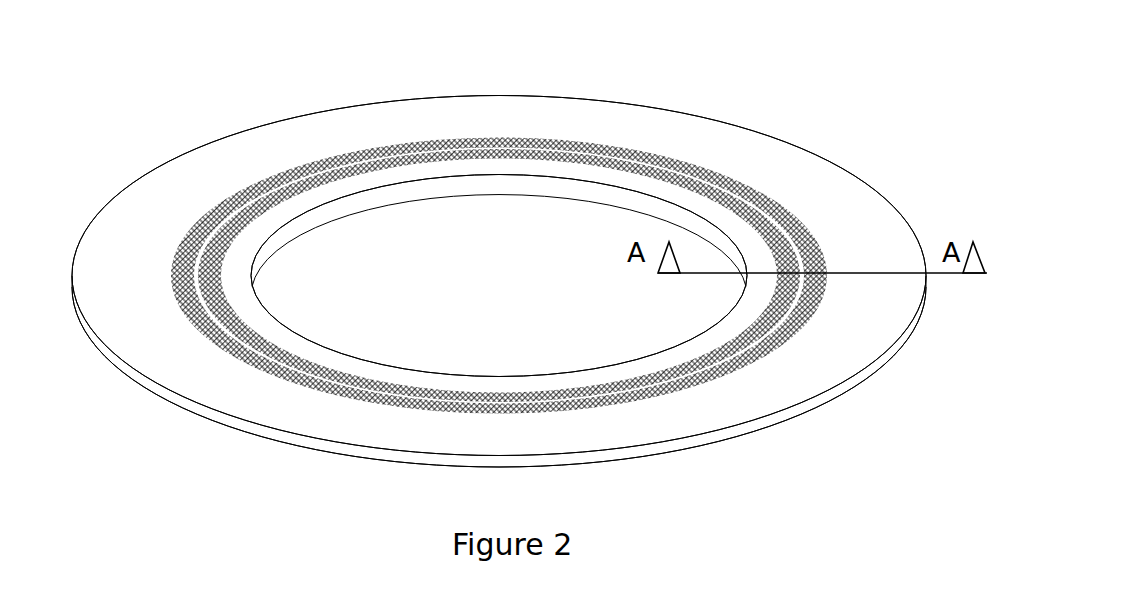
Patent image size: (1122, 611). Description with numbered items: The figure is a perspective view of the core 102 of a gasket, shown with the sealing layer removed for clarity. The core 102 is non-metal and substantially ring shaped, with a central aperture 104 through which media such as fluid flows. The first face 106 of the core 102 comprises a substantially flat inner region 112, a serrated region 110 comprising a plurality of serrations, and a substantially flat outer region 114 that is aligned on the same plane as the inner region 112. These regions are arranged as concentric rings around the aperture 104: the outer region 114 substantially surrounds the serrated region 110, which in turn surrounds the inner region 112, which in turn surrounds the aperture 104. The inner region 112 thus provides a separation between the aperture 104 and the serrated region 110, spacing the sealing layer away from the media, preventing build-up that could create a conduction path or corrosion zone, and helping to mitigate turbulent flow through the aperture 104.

The core 102 is at (255, 110).
The aperture 104 is at (380, 344).
The first face 106 is at (645, 115).
The serrated region 110 is at (799, 220).
The substantially flat inner region 112 is at (760, 302).
The substantially flat outer region 114 is at (170, 176).